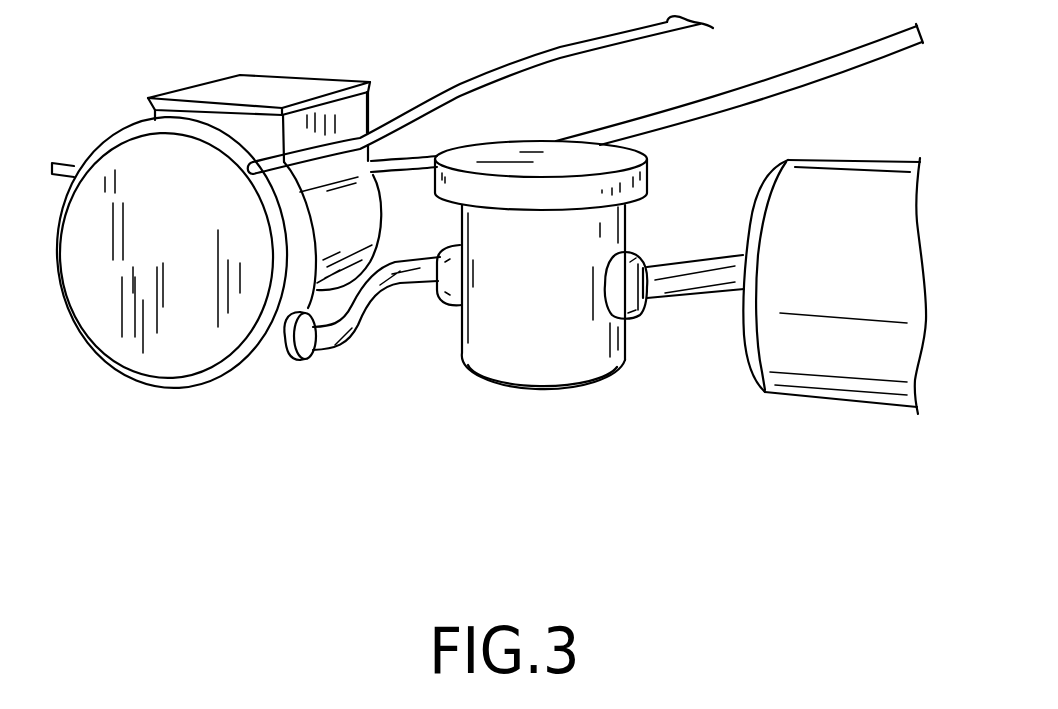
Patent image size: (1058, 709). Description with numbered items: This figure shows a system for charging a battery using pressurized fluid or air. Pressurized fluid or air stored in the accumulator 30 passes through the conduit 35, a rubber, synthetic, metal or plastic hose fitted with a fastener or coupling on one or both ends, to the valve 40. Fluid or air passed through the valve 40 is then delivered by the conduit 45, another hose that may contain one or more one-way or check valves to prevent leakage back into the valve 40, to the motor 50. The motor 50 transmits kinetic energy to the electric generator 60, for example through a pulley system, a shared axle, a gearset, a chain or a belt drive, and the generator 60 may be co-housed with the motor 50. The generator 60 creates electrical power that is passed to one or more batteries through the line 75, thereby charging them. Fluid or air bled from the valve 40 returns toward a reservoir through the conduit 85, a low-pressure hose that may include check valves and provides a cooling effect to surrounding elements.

The accumulator 30 is at (850, 178).
The conduit 35 is at (693, 297).
The valve 40 is at (547, 381).
The conduit 45 is at (345, 344).
The motor 50 is at (218, 352).
The electric generator 60 is at (293, 86).
The line 75 is at (883, 48).
The conduit 85 is at (617, 34).